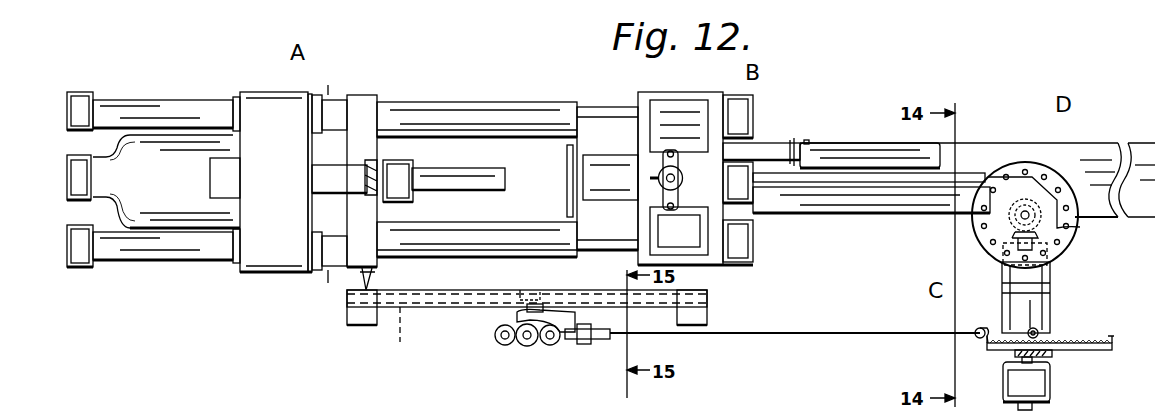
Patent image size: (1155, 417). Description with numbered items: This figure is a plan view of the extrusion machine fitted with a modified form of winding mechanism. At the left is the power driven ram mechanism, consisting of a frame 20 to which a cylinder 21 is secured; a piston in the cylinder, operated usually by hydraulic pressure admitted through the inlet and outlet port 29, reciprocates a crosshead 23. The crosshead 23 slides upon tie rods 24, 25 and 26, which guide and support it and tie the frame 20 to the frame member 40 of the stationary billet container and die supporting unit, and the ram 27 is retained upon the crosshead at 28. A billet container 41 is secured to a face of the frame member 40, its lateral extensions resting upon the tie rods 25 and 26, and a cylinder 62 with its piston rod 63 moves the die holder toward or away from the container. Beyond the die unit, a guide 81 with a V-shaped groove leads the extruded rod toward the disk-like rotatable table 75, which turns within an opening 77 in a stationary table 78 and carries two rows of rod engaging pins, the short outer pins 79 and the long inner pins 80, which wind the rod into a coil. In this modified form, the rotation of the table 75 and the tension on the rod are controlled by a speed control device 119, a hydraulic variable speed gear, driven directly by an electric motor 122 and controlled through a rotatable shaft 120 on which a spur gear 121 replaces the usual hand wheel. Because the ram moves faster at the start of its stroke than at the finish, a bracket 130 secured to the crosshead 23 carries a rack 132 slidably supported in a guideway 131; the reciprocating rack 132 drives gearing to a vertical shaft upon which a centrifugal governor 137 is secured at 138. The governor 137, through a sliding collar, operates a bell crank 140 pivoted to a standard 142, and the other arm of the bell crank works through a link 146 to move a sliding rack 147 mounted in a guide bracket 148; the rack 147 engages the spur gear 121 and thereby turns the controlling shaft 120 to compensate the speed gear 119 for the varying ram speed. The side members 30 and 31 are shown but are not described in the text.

The frame 20 is at (272, 258).
The cylinder 21 is at (146, 182).
The crosshead 23 is at (370, 224).
The tie rod 24 is at (588, 175).
The tie rod 25 is at (478, 236).
The tie rod 26 is at (440, 112).
The ram 27 is at (490, 178).
The ram retaining facilities 28 is at (404, 170).
The inlet and outlet port 29 is at (80, 200).
The upper side tube 30 is at (147, 110).
The lower side tube 31 is at (170, 252).
The frame member 40 is at (700, 112).
The billet container 41 is at (596, 135).
The cylinder 62 is at (842, 150).
The piston rod 63 is at (775, 152).
The rotatable table 75 is at (1053, 244).
The opening 77 is at (1042, 174).
The stationary table 78 is at (1010, 150).
The short outer pins 79 is at (993, 244).
The long inner pins 80 is at (1058, 226).
The guide 81 is at (912, 198).
The speed control device 119 is at (1033, 306).
The rotatable shaft 120 is at (1040, 334).
The spur gear 121 is at (1003, 332).
The electric motor 122 is at (1048, 392).
The bracket 130 is at (362, 278).
The guideway 131 is at (438, 300).
The rack 132 is at (400, 336).
The centrifugal governor 137 is at (498, 340).
The governor securing point 138 is at (530, 346).
The bell crank 140 is at (590, 342).
The standard 142 is at (577, 318).
The link 146 is at (730, 336).
The sliding rack 147 is at (1112, 340).
The guide bracket 148 is at (1052, 354).